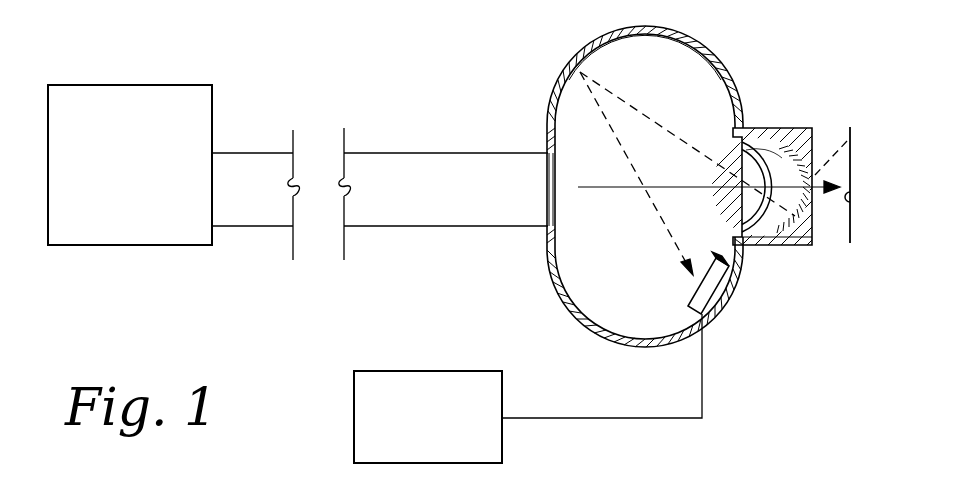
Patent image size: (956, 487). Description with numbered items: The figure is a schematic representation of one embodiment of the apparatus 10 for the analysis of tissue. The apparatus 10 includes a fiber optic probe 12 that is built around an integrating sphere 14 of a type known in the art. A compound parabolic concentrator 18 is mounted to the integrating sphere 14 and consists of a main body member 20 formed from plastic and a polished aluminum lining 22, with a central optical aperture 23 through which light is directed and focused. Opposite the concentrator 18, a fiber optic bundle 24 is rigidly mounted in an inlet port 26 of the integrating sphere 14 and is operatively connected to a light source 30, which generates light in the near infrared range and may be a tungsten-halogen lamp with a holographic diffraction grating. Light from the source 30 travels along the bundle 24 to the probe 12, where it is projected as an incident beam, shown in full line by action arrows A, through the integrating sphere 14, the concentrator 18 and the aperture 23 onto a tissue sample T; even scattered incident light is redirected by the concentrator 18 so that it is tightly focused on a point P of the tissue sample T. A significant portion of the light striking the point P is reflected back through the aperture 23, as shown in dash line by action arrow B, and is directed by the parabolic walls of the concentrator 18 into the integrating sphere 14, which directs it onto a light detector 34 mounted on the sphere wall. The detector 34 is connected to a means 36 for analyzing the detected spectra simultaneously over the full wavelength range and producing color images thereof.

The apparatus 10 is at (548, 55).
The fiber optic probe 12 is at (738, 64).
The integrating sphere 14 is at (732, 265).
The compound parabolic concentrator 18 is at (785, 128).
The main body member 20 is at (810, 244).
The polished aluminum lining 22 is at (764, 225).
The central optical aperture 23 is at (835, 162).
The fiber optic bundle 24 is at (242, 228).
The inlet port 26 is at (540, 168).
The light source 30 is at (137, 222).
The light detector 34 is at (714, 291).
The analysis means 36 is at (455, 454).
The action arrows A is at (624, 198).
The action arrow B is at (662, 126).
The tissue sample T is at (852, 167).
The point P is at (853, 199).